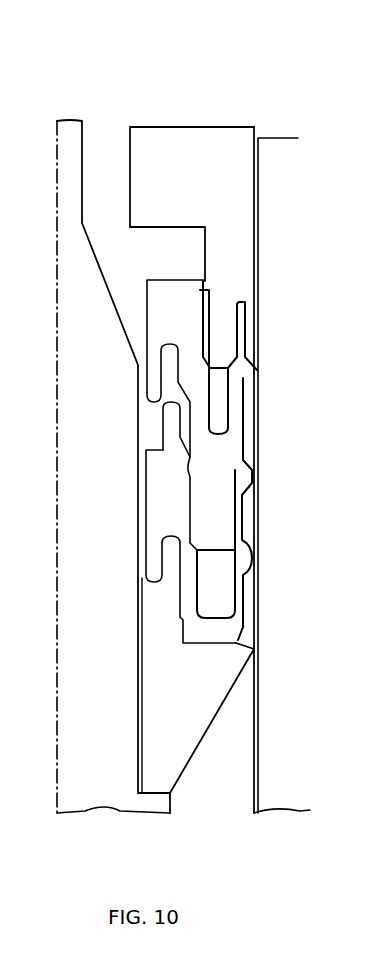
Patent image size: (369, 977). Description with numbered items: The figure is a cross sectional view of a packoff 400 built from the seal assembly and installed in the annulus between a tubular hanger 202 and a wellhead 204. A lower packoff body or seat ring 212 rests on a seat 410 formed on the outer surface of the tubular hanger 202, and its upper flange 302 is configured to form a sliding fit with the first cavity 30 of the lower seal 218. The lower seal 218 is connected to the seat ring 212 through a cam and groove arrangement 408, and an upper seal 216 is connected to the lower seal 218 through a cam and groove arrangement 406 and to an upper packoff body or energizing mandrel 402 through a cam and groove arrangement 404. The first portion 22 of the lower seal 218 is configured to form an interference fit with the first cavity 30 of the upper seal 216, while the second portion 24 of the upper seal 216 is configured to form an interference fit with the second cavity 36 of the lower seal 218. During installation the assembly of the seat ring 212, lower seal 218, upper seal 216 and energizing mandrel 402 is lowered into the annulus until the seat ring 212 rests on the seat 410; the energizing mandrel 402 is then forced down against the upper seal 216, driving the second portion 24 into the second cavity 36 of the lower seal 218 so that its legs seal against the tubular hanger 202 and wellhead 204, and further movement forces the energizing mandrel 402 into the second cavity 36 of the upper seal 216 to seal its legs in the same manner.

The packoff 400 is at (247, 108).
The first portion 22 is at (172, 279).
The first cavity 30 is at (170, 344).
The second cavity 36 is at (226, 403).
The second portion 24 is at (250, 569).
The tubular hanger 202 is at (105, 782).
The wellhead 204 is at (309, 782).
The seat ring 212 is at (213, 730).
The upper seal 216 is at (146, 333).
The lower seal 218 is at (138, 512).
The upper flange 302 is at (146, 574).
The energizing mandrel 402 is at (246, 326).
The cam and groove arrangement 404 is at (226, 266).
The cam and groove arrangement 406 is at (192, 461).
The cam and groove arrangement 408 is at (179, 622).
The seat 410 is at (152, 792).